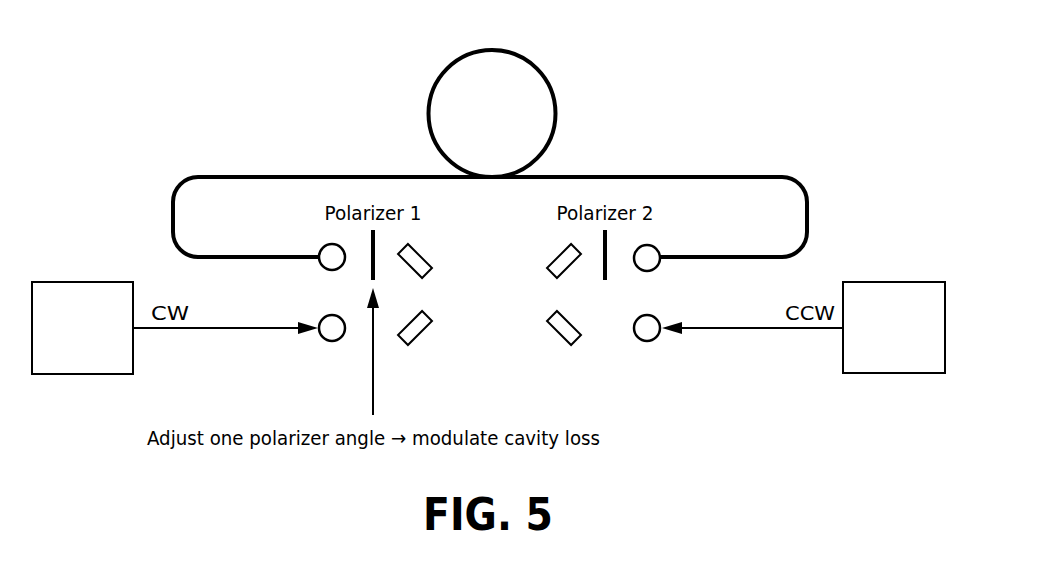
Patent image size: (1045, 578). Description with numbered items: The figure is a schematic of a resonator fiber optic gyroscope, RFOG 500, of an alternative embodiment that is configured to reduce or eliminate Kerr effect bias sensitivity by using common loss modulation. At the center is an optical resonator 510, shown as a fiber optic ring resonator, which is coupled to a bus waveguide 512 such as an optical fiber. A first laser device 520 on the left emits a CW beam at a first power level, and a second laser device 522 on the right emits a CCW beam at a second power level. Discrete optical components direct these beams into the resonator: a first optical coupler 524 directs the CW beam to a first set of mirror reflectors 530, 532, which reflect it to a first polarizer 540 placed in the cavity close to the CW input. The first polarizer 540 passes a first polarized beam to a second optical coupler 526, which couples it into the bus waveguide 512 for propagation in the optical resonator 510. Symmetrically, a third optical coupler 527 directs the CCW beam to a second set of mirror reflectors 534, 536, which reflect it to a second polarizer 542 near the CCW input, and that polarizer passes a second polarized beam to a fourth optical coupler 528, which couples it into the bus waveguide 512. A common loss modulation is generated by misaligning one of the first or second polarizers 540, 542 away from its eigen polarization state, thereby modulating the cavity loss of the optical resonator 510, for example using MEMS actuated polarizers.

The RFOG 500 is at (233, 104).
The optical resonator 510 is at (555, 115).
The bus waveguide 512 is at (677, 176).
The first laser device 520 is at (92, 282).
The second laser device 522 is at (887, 282).
The first optical coupler 524 is at (332, 341).
The second optical coupler 526 is at (332, 270).
The third optical coupler 527 is at (647, 341).
The fourth optical coupler 528 is at (647, 271).
The mirror reflector 530 is at (423, 323).
The mirror reflector 532 is at (432, 268).
The mirror reflector 534 is at (557, 323).
The mirror reflector 536 is at (547, 268).
The first polarizer 540 is at (373, 230).
The second polarizer 542 is at (605, 230).